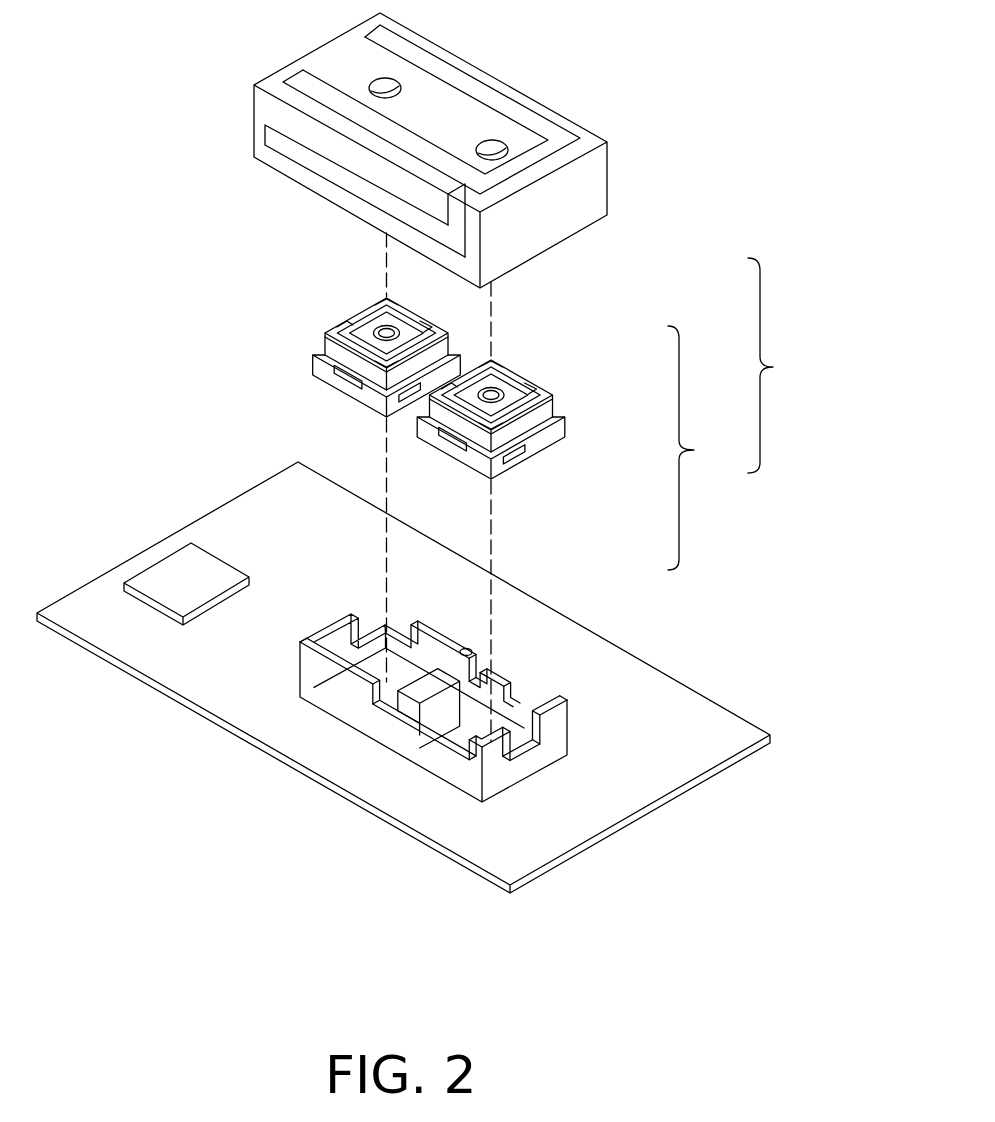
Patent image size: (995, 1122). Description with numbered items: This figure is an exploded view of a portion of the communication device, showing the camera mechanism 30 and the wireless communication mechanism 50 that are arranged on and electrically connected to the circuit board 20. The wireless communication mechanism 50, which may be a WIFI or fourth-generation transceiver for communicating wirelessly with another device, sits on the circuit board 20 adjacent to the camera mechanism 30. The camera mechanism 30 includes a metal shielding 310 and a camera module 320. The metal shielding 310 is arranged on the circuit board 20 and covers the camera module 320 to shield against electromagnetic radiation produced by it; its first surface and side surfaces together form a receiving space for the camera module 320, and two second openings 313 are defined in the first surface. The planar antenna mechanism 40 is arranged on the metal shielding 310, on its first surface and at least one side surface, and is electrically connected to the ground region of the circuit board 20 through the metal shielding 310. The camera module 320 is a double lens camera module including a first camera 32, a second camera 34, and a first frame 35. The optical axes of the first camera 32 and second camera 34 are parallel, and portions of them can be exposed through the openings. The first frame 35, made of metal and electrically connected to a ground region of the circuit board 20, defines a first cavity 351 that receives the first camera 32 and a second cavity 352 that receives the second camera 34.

The circuit board 20 is at (662, 697).
The camera mechanism 30 is at (780, 365).
The first camera 32 is at (441, 353).
The second camera 34 is at (546, 418).
The first frame 35 is at (460, 650).
The antenna mechanism 40 is at (462, 85).
The wireless communication mechanism 50 is at (168, 583).
The metal shielding 310 is at (532, 235).
The second opening 313 is at (386, 92).
The camera module 320 is at (709, 448).
The first cavity 351 is at (362, 676).
The second cavity 352 is at (464, 737).